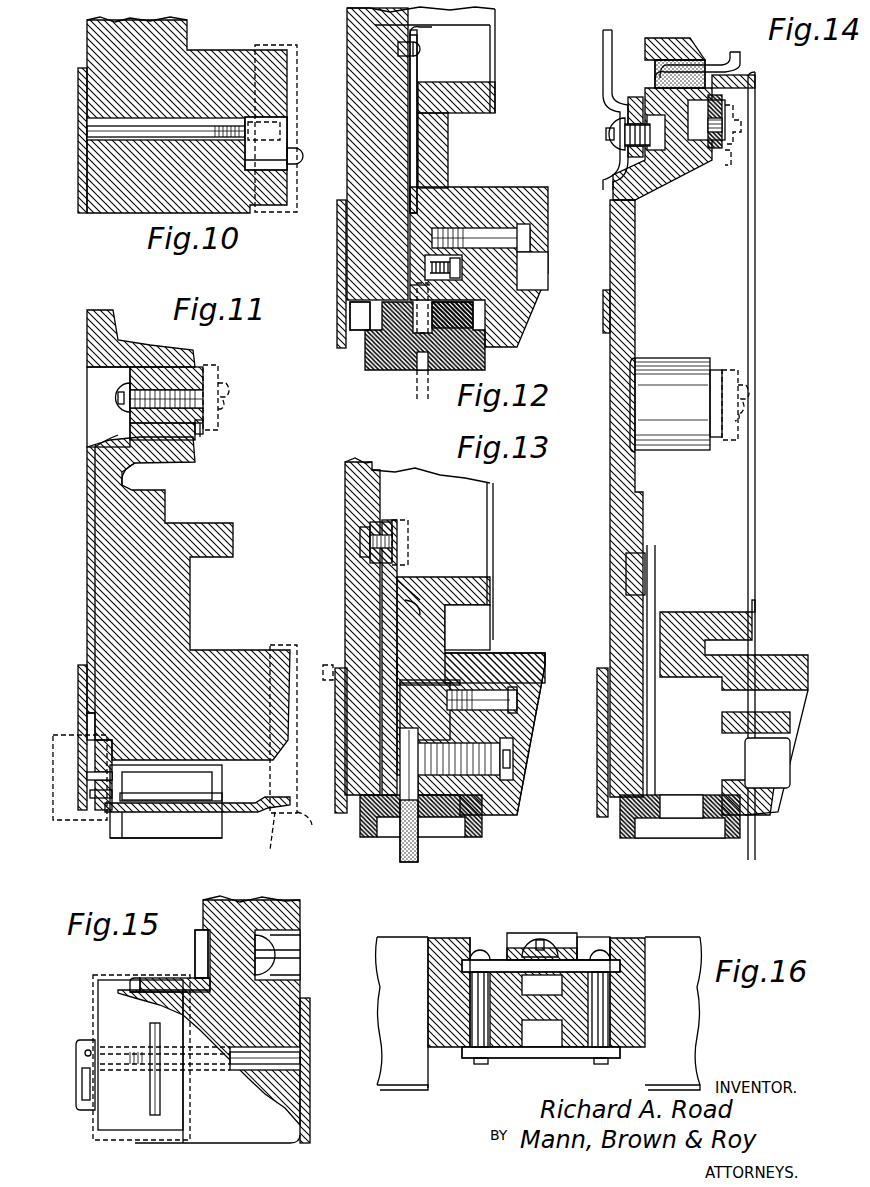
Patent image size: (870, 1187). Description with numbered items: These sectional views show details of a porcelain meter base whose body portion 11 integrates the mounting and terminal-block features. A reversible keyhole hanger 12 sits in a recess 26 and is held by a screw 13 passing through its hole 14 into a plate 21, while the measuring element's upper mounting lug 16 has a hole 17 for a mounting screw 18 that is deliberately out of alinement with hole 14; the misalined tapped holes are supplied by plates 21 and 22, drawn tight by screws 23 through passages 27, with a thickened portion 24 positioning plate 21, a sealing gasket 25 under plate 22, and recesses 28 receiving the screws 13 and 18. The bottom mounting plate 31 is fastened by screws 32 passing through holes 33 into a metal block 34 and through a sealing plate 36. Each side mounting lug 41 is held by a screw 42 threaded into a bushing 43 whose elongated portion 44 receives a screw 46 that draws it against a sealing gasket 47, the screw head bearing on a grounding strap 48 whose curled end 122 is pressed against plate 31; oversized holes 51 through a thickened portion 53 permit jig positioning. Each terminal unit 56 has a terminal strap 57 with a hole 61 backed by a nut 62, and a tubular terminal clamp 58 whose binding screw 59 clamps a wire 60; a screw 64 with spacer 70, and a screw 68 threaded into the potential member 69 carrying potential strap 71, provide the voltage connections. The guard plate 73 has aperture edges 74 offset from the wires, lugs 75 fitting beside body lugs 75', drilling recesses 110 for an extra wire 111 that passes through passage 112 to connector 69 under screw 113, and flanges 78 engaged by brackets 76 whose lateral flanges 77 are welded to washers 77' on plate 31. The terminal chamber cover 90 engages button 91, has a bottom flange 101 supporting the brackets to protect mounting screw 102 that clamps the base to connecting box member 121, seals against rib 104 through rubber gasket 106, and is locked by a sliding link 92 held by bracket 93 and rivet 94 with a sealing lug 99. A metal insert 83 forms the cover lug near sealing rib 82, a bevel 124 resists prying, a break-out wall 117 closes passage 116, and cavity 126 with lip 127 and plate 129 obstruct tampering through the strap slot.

In FIG. 10, the body portion 11 is at (100, 38).
In FIG. 12, the body portion 11 is at (360, 30).
In FIG. 14, the body portion 11 is at (630, 315).
In FIG. 11, the body portion 11 is at (105, 575).
In FIG. 13, the body portion 11 is at (345, 490).
In FIG. 15, the body portion 11 is at (250, 905).
In FIG. 16, the body portion 11 is at (398, 950).
In FIG. 14, the keyhole hanger 12 is at (605, 60).
In FIG. 16, the keyhole hanger 12 is at (515, 945).
In FIG. 14, the screw 13 is at (610, 135).
In FIG. 16, the screw 13 is at (545, 940).
In FIG. 14, the hole 14 is at (628, 150).
In FIG. 16, the hole 14 is at (522, 950).
In FIG. 14, the upper mounting lug 16 is at (583, 125).
In FIG. 14, the hole 17 is at (735, 150).
In FIG. 14, the measuring element mounting screw 18 is at (740, 130).
In FIG. 14, the plate 21 is at (718, 148).
In FIG. 16, the plate 21 is at (505, 1058).
In FIG. 14, the plate 22 is at (640, 170).
In FIG. 16, the plate 22 is at (585, 960).
In FIG. 16, the screws 23 is at (478, 975).
In FIG. 14, the thickened portion 24 is at (690, 160).
In FIG. 16, the sealing gasket 25 is at (445, 945).
In FIG. 14, the recess 26 is at (630, 60).
In FIG. 16, the recess 26 is at (620, 940).
In FIG. 16, the passages 27 is at (610, 1012).
In FIG. 14, the recesses 28 is at (695, 140).
In FIG. 16, the recesses 28 is at (555, 985).
In FIG. 10, the bottom mounting plate 31 is at (82, 213).
In FIG. 12, the bottom mounting plate 31 is at (337, 282).
In FIG. 14, the bottom mounting plate 31 is at (600, 800).
In FIG. 11, the bottom mounting plate 31 is at (80, 670).
In FIG. 13, the bottom mounting plate 31 is at (300, 815).
In FIG. 15, the bottom mounting plate 31 is at (310, 1095).
In FIG. 10, the screws 32 is at (105, 132).
In FIG. 15, the screws 32 is at (285, 1058).
In FIG. 10, the hole 33 is at (195, 118).
In FIG. 15, the hole 33 is at (275, 1050).
In FIG. 10, the metal block 34 is at (278, 150).
In FIG. 15, the sealing plate 36 is at (158, 1100).
In FIG. 14, the mounting lug 41 is at (740, 430).
In FIG. 11, the mounting lug 41 is at (218, 375).
In FIG. 14, the screw 42 is at (748, 390).
In FIG. 11, the screw 42 is at (226, 390).
In FIG. 14, the bushing 43 is at (718, 438).
In FIG. 11, the bushing 43 is at (203, 435).
In FIG. 11, the elongated portion 44 is at (160, 390).
In FIG. 11, the screw 46 is at (120, 400).
In FIG. 14, the sealing gasket 47 is at (715, 365).
In FIG. 11, the sealing gasket 47 is at (200, 437).
In FIG. 11, the grounding strap 48 is at (100, 442).
In FIG. 11, the oversized holes 51 is at (175, 372).
In FIG. 14, the thickened portion 53 is at (680, 452).
In FIG. 11, the thickened portion 53 is at (160, 448).
In FIG. 13, the terminal unit 56 is at (390, 640).
In FIG. 13, the terminal strap 57 is at (400, 570).
In FIG. 13, the tubular terminal clamp 58 is at (495, 660).
In FIG. 13, the binding screw 59 is at (513, 770).
In FIG. 13, the wire 60 is at (402, 855).
In FIG. 13, the hole 61 is at (405, 540).
In FIG. 13, the nut 62 is at (385, 522).
In FIG. 13, the screw 64 is at (520, 705).
In FIG. 12, the screw 68 is at (500, 228).
In FIG. 12, the potential member 69 is at (445, 215).
In FIG. 13, the spacer 70 is at (540, 657).
In FIG. 12, the potential terminal strap 71 is at (420, 138).
In FIG. 12, the guard plate 73 is at (485, 362).
In FIG. 14, the guard plate 73 is at (742, 838).
In FIG. 11, the guard plate 73 is at (170, 840).
In FIG. 13, the guard plate 73 is at (482, 830).
In FIG. 14, the edges 74 is at (672, 838).
In FIG. 13, the edges 74 is at (390, 830).
In FIG. 12, the lugs 75 is at (504, 321).
In FIG. 11, the lugs 75 is at (171, 831).
In FIG. 12, the lugs 75' is at (331, 320).
In FIG. 11, the brackets 76 is at (258, 812).
In FIG. 11, the lateral flanges 77 is at (77, 760).
In FIG. 11, the washers 77' is at (100, 834).
In FIG. 11, the flanges 78 is at (195, 812).
In FIG. 12, the sealing rib 82 is at (495, 100).
In FIG. 14, the sealing rib 82 is at (755, 620).
In FIG. 14, the metal insert 83 is at (725, 60).
In FIG. 10, the terminal chamber cover 90 is at (297, 212).
In FIG. 11, the terminal chamber cover 90 is at (310, 826).
In FIG. 15, the terminal chamber cover 90 is at (95, 1130).
In FIG. 10, the button 91 is at (298, 160).
In FIG. 15, the link 92 is at (148, 980).
In FIG. 15, the bracket 93 is at (168, 978).
In FIG. 15, the rivet 94 is at (272, 952).
In FIG. 15, the lug 99 is at (80, 1055).
In FIG. 11, the bottom flange 101 is at (283, 837).
In FIG. 11, the mounting screw 102 is at (122, 815).
In FIG. 12, the sealing rib 104 is at (548, 205).
In FIG. 14, the sealing rib 104 is at (612, 200).
In FIG. 13, the sealing rib 104 is at (545, 680).
In FIG. 11, the rubber gasket 106 is at (297, 675).
In FIG. 13, the rubber gasket 106 is at (305, 690).
In FIG. 12, the drilling recesses 110 is at (420, 370).
In FIG. 12, the wire 111 is at (420, 395).
In FIG. 12, the passage 112 is at (410, 285).
In FIG. 12, the screw 113 is at (462, 268).
In FIG. 14, the passage 116 is at (700, 612).
In FIG. 14, the thin wall 117 is at (665, 615).
In FIG. 11, the connecting box member 121 is at (75, 820).
In FIG. 11, the curled end 122 is at (87, 720).
In FIG. 14, the bevel 124 is at (700, 45).
In FIG. 13, the cavity 126 is at (460, 580).
In FIG. 13, the lip 127 is at (415, 590).
In FIG. 13, the plate 129 is at (480, 650).